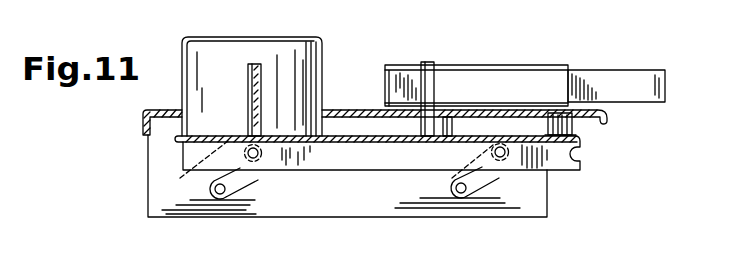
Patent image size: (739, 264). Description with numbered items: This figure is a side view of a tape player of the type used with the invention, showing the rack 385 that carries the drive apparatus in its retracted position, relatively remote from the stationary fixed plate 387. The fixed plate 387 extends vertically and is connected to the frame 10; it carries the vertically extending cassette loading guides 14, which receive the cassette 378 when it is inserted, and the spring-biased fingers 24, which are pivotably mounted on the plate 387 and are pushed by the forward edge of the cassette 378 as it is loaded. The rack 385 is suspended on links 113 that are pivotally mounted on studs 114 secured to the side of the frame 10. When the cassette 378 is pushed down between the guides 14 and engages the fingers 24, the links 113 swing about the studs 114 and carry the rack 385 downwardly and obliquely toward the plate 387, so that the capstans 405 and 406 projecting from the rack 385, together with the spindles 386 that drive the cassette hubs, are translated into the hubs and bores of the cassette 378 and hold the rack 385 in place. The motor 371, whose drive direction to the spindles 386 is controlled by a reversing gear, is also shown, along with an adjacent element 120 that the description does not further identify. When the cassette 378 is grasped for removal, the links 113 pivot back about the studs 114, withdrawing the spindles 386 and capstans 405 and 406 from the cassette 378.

The frame 10 is at (344, 208).
The cassette loading guides 14 is at (403, 65).
The fingers 24 is at (430, 62).
The links 113 is at (252, 175).
The studs 114 is at (218, 198).
The plate 120 is at (258, 64).
The motor 371 is at (245, 37).
The cassette 378 is at (643, 51).
The rack 385 is at (578, 162).
The spindles 386 is at (573, 128).
The fixed plate 387 is at (357, 101).
The capstan 405 is at (414, 142).
The capstan 406 is at (457, 133).